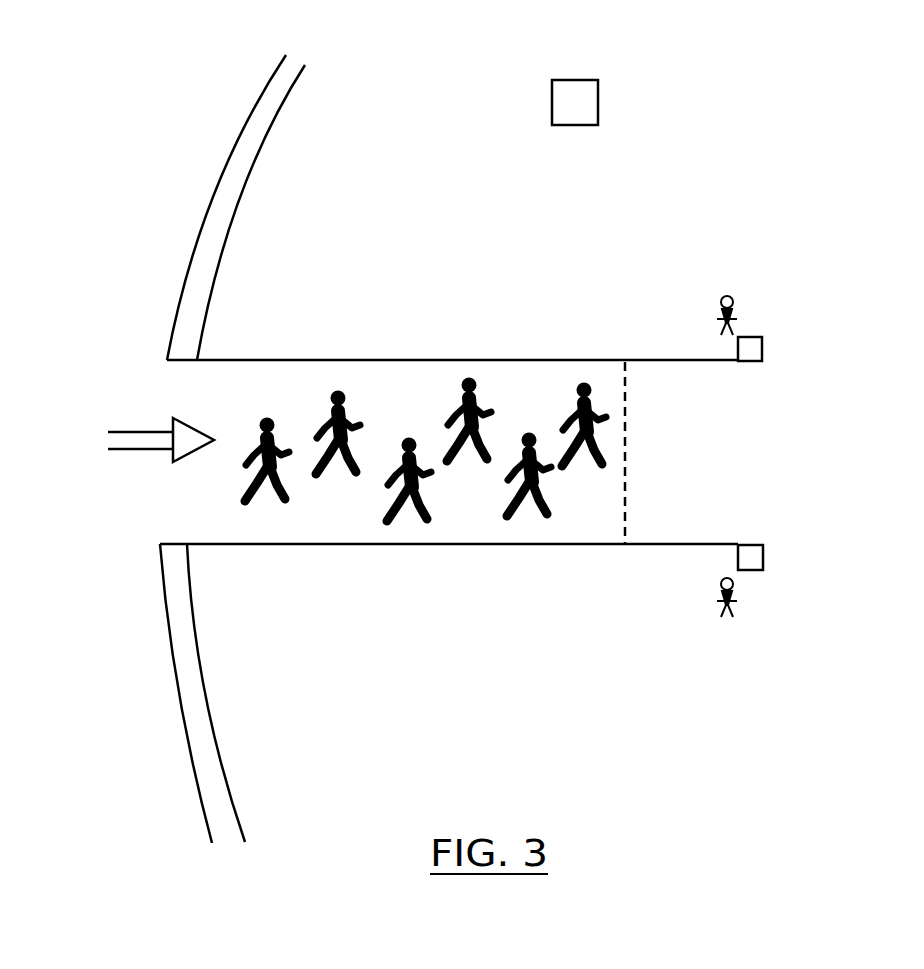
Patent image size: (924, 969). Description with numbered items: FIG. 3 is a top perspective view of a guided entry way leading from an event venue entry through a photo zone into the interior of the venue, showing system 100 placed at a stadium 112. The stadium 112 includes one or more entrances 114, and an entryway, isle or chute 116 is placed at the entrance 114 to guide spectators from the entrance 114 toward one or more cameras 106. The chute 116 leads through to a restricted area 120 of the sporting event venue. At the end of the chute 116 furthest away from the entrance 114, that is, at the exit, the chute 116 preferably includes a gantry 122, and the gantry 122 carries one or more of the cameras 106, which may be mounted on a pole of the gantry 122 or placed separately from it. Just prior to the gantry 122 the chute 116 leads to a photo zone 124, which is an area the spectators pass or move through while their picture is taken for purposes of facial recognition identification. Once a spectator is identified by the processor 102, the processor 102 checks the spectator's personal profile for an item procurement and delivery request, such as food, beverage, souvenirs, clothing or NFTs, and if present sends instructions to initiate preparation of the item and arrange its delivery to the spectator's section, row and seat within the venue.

The system 100 is at (168, 140).
The processor 102 is at (550, 98).
The cameras 106 is at (738, 312).
The stadium 112 is at (192, 780).
The entrance 114 is at (200, 392).
The chute 116 is at (447, 360).
The restricted area 120 is at (762, 466).
The gantry 122 is at (762, 348).
The photo zone 124 is at (642, 380).